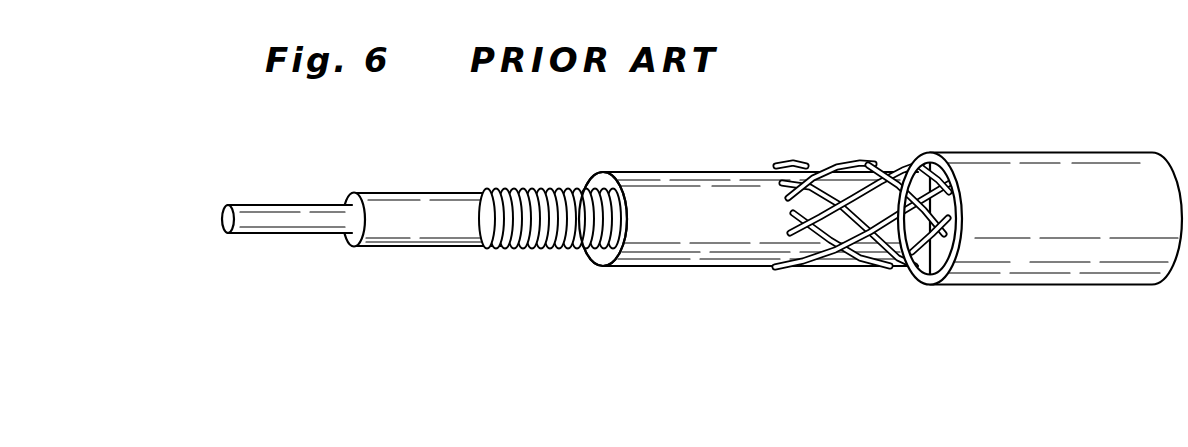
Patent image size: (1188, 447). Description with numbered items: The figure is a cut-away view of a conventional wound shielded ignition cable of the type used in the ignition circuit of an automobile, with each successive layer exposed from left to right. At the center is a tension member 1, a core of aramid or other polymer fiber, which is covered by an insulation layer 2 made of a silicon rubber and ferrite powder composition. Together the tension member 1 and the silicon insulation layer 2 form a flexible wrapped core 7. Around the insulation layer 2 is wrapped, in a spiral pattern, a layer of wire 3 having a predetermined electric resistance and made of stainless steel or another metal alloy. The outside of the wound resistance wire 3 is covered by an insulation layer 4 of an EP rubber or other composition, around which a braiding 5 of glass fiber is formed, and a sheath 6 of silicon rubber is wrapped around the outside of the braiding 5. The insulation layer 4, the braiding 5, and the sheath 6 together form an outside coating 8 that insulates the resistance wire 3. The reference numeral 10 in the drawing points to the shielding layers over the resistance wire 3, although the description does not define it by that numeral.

The tension member 1 is at (256, 234).
The insulation layer 2 is at (387, 247).
The wire 3 is at (470, 247).
The insulation layer 4 is at (683, 246).
The braiding 5 is at (820, 269).
The sheath 6 is at (1038, 253).
The flexible wrapped core 7 is at (418, 236).
The outside coating 8 is at (862, 235).
The shield tape 10 is at (732, 236).